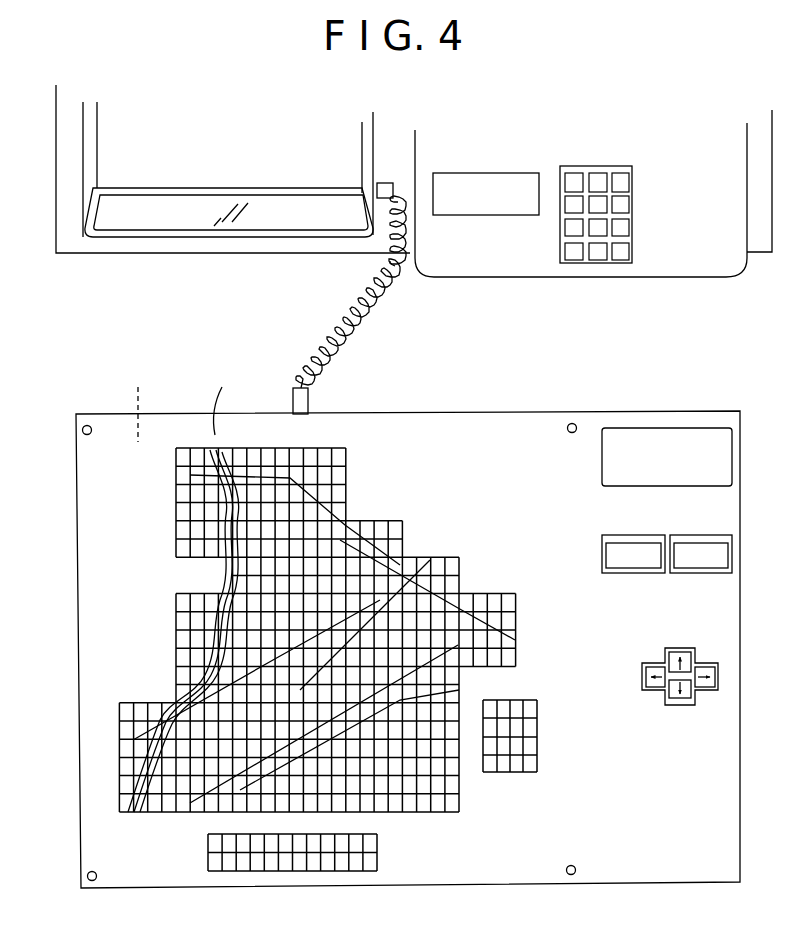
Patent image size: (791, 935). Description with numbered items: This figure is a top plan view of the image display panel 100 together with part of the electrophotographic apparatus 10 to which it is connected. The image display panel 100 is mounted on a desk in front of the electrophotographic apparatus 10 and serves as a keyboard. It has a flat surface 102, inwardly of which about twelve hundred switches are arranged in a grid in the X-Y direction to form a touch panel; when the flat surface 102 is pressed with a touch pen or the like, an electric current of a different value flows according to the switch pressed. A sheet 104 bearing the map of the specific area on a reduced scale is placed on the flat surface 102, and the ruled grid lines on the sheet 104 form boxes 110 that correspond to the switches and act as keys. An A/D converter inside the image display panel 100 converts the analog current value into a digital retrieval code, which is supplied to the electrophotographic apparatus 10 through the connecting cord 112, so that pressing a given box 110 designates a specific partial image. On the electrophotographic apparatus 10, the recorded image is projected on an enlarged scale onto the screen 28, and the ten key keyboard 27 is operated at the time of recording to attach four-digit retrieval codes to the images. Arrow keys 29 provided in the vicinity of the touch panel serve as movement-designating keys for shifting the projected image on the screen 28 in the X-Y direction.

The electrophotographic apparatus 10 is at (52, 208).
The screen 28 is at (135, 218).
The ten key keyboard 27 is at (603, 167).
The connecting cord 112 is at (383, 297).
The image display panel 100 is at (73, 460).
The flat surface 102 is at (142, 402).
The sheet 104 is at (220, 399).
The boxes 110 is at (340, 455).
The arrow keys 29 is at (684, 643).